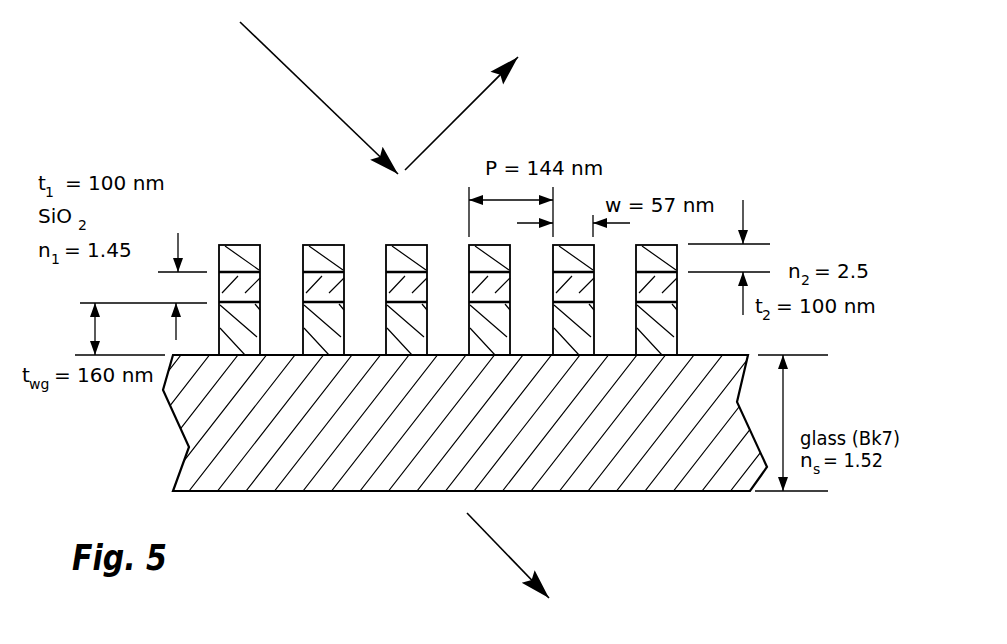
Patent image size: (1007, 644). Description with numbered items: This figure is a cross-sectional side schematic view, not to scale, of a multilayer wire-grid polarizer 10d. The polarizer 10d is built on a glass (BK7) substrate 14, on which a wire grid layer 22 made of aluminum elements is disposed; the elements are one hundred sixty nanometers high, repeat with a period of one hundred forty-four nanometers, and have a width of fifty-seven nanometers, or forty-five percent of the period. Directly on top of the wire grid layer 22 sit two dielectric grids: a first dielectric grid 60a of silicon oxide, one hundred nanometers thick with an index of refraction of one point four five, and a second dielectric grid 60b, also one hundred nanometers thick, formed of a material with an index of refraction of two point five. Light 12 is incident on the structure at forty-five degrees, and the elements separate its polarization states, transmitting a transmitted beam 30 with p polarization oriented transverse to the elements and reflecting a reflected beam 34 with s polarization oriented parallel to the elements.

The light 12 is at (290, 68).
The reflected beam 34 is at (473, 100).
The transmitted beam 30 is at (497, 548).
The multilayer wire-grid polarizer 10d is at (323, 508).
The glass substrate 14 is at (728, 491).
The wire grid layer 22 is at (650, 342).
The first dielectric grid 60a is at (303, 292).
The second dielectric grid 60b is at (248, 245).